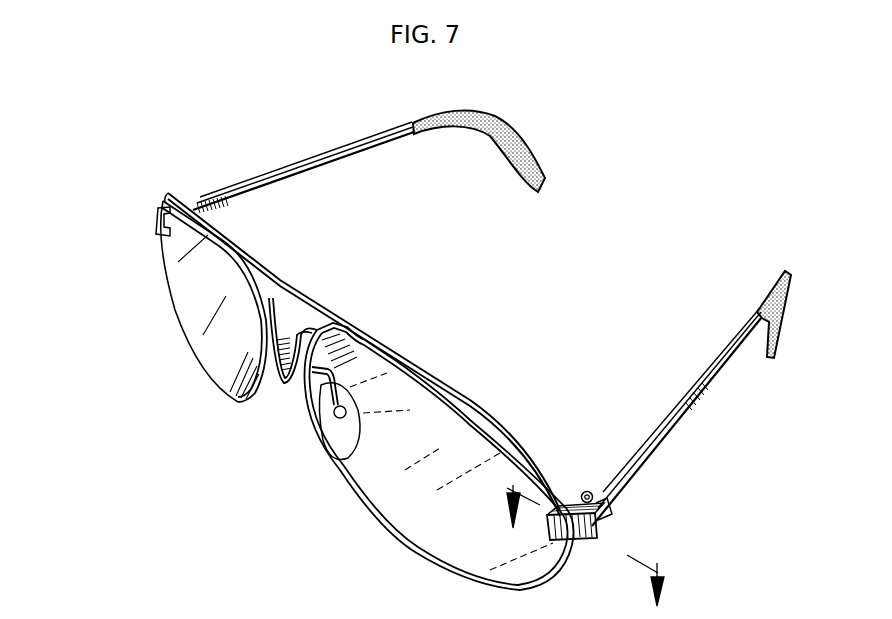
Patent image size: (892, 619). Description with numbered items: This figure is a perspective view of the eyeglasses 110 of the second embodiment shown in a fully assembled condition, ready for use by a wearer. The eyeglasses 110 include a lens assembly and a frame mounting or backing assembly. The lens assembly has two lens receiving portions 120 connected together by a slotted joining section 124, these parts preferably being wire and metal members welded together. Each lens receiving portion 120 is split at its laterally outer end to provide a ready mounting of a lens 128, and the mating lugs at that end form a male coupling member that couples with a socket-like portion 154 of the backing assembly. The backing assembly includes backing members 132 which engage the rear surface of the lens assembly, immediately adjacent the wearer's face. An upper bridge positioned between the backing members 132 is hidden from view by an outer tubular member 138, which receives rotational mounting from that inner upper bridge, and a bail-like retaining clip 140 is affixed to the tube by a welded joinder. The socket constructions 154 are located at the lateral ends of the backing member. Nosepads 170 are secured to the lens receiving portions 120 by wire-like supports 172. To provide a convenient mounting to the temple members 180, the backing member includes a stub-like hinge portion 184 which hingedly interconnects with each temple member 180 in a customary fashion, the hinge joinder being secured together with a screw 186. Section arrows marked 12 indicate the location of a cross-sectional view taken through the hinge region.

The eyeglasses 110 is at (578, 322).
The lens receiving portion 120 is at (255, 286).
The slotted joining section 124 is at (293, 313).
The lens 128 is at (213, 330).
The backing member 132 is at (205, 218).
The outer tubular member 138 is at (280, 278).
The bail-like retaining clip 140 is at (287, 380).
The socket construction 154 is at (160, 216).
The nosepad 170 is at (338, 426).
The wire-like support 172 is at (375, 360).
The temple member 180 is at (333, 157).
The stub-like hinge portion 184 is at (603, 522).
The screw 186 is at (589, 490).
The section line 12 is at (595, 545).